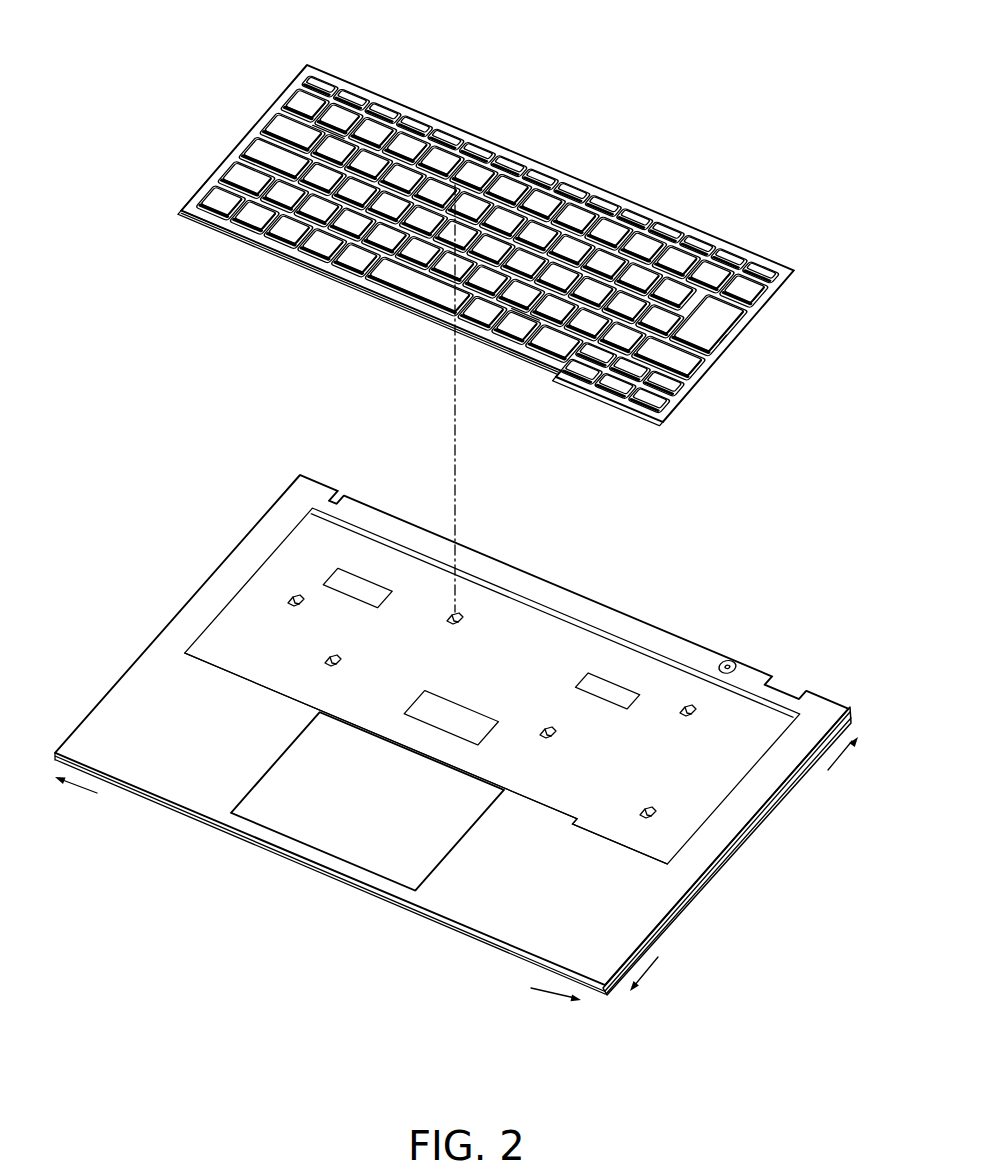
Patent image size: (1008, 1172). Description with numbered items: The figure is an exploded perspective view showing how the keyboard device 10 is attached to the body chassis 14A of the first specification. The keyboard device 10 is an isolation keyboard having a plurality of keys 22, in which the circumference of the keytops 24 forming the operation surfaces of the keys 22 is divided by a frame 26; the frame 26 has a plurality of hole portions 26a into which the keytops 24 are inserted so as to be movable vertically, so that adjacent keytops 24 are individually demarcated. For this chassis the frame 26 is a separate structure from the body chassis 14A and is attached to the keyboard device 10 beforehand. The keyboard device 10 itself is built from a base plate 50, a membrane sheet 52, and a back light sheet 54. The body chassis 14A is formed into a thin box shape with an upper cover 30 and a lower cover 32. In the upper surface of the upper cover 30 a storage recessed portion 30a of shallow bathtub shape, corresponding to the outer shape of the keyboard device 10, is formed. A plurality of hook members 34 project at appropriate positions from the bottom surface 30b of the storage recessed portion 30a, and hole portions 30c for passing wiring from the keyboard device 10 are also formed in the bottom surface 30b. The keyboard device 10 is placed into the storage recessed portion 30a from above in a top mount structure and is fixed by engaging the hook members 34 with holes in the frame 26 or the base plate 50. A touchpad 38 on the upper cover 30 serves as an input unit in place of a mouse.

The keyboard device 10 is at (228, 114).
The body chassis 14A is at (170, 571).
The keys 22 is at (405, 120).
The keytops 24 is at (494, 212).
The frame 26 is at (213, 220).
The hole portions 26a is at (332, 128).
The upper cover 30 is at (633, 887).
The storage recessed portion 30a is at (250, 668).
The bottom surface 30b is at (552, 633).
The hole portions 30c is at (365, 587).
The lower cover 32 is at (657, 938).
The hook members 34 is at (331, 655).
The touchpad 38 is at (348, 798).
The base plate 50 is at (420, 318).
The membrane sheet 52 is at (420, 318).
The back light sheet 54 is at (340, 283).